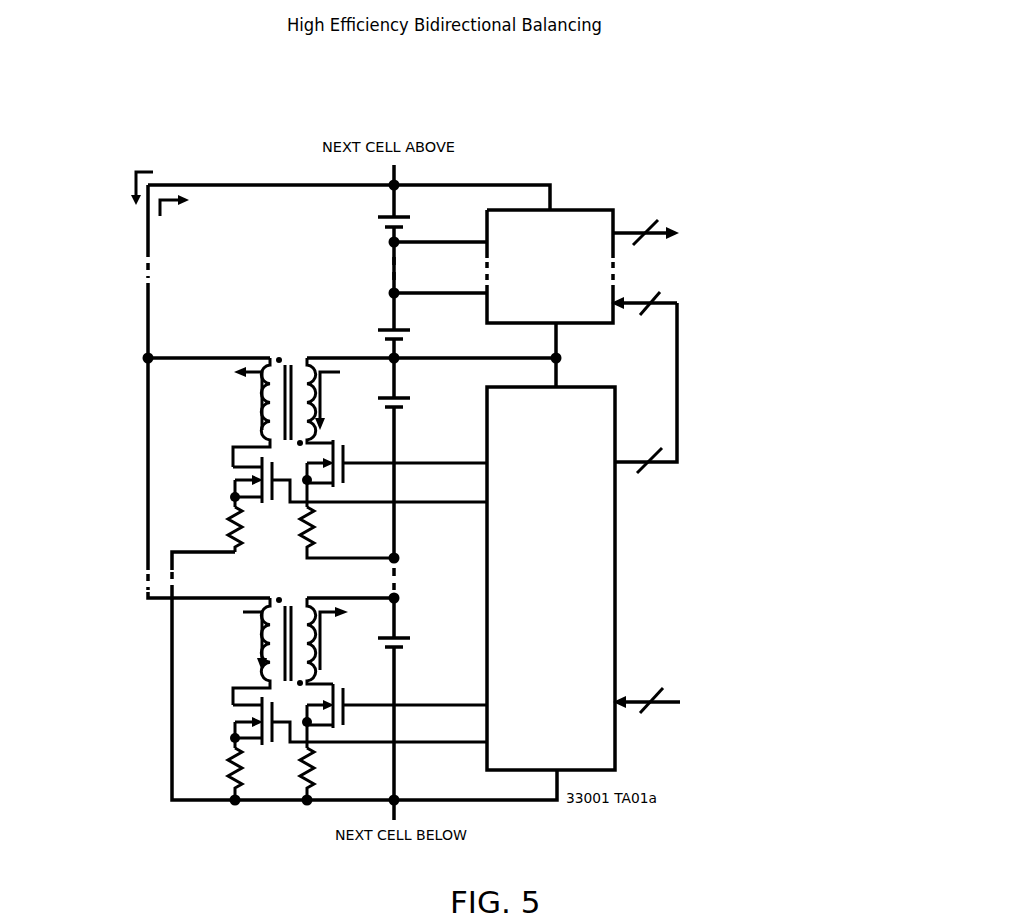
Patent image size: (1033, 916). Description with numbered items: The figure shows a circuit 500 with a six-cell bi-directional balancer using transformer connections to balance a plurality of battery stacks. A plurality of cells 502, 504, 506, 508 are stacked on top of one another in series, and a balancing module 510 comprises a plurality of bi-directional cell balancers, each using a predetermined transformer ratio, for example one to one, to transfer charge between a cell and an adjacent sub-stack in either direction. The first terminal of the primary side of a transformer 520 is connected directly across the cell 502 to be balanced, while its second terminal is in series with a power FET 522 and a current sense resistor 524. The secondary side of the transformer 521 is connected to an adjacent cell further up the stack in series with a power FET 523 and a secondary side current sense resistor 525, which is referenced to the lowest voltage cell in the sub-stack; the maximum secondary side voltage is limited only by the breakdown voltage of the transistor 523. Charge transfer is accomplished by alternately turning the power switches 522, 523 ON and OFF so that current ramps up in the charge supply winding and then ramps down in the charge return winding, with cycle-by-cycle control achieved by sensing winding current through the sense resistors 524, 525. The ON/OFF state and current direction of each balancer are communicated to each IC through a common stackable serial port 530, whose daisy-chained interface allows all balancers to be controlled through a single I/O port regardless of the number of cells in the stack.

The circuit 500 is at (333, 446).
The cell 502 is at (410, 625).
The cell 504 is at (410, 385).
The cell 506 is at (405, 318).
The cell 508 is at (408, 202).
The balancing module 510 is at (618, 560).
The transformer primary side 520 is at (311, 585).
The transformer secondary side 521 is at (268, 588).
The power FET 522 is at (320, 677).
The power FET 523 is at (230, 705).
The current sense resistor 524 is at (321, 778).
The secondary side current sense resistor 525 is at (230, 742).
The stackable serial port 530 is at (657, 231).